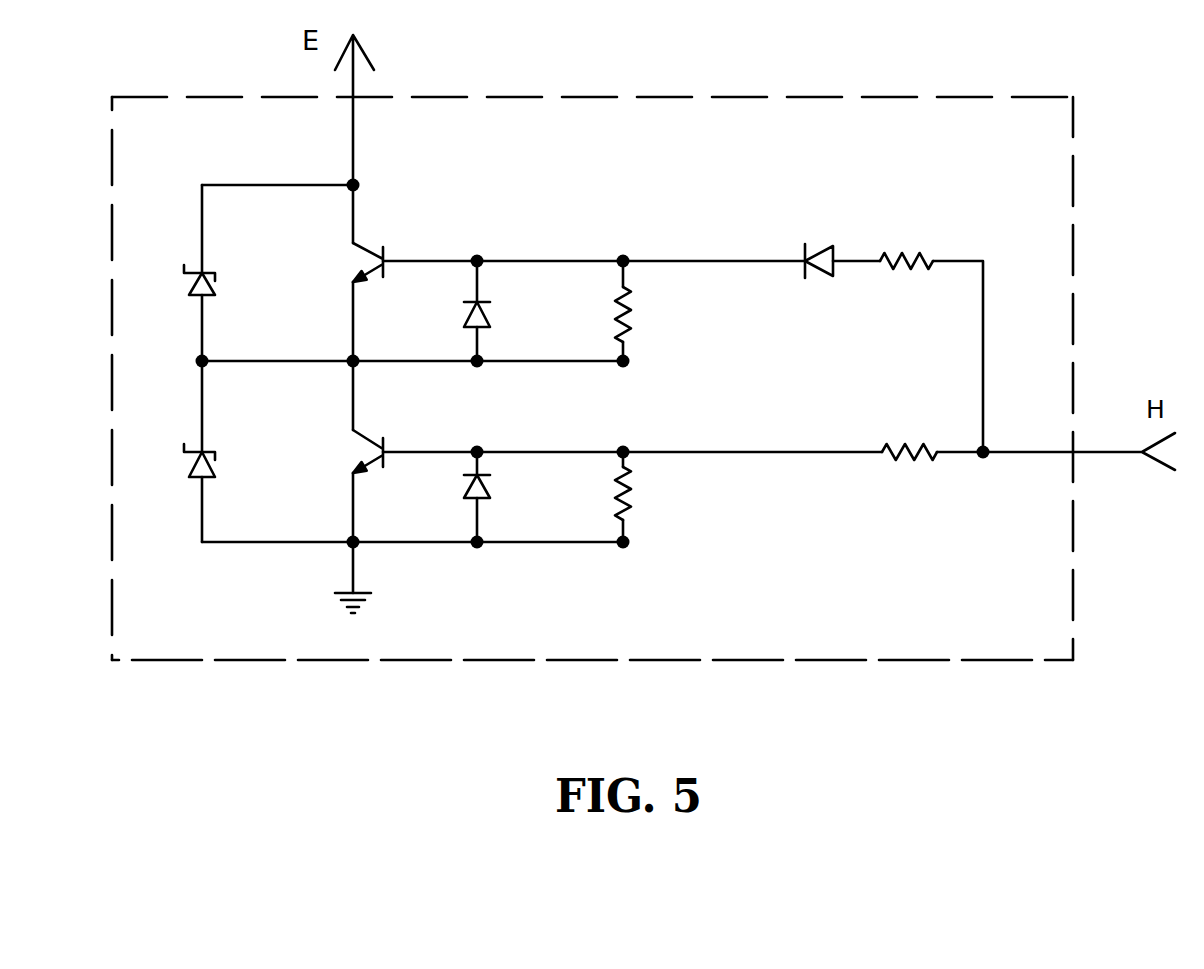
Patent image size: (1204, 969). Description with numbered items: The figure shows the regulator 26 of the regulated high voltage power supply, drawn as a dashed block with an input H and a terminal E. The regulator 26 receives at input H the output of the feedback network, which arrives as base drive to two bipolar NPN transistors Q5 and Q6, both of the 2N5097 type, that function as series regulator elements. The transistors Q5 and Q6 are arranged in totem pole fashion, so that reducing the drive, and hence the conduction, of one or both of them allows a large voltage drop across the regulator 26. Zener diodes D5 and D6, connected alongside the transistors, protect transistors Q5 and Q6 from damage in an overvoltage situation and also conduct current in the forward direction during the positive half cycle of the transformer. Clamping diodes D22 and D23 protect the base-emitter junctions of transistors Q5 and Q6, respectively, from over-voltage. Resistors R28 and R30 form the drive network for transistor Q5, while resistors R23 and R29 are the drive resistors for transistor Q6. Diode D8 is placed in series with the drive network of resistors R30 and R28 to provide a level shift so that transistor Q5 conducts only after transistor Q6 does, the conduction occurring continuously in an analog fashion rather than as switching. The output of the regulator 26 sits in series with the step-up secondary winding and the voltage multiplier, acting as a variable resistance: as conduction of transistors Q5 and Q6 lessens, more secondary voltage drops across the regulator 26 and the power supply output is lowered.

The regulator 26 is at (1073, 588).
The transistor Q5 is at (417, 239).
The transistor Q6 is at (416, 429).
The Zener diode D5 is at (244, 290).
The Zener diode D6 is at (253, 480).
The diode D8 is at (830, 258).
The clamping diode D22 is at (532, 313).
The clamping diode D23 is at (528, 496).
The drive resistor R23 is at (656, 496).
The drive resistor R28 is at (656, 313).
The drive resistor R29 is at (916, 446).
The drive resistor R30 is at (911, 251).